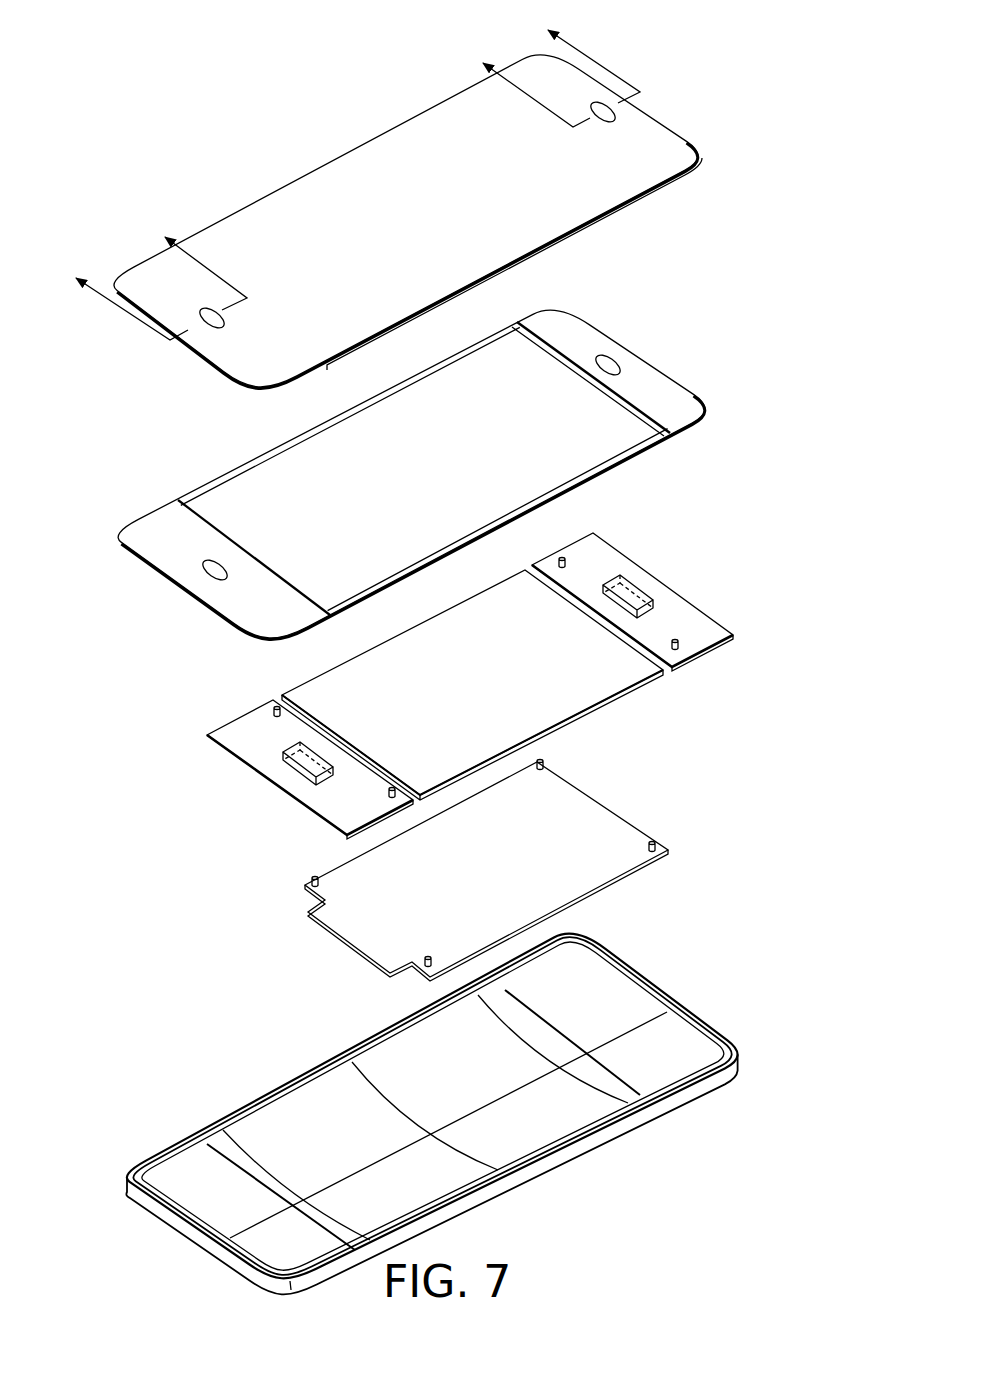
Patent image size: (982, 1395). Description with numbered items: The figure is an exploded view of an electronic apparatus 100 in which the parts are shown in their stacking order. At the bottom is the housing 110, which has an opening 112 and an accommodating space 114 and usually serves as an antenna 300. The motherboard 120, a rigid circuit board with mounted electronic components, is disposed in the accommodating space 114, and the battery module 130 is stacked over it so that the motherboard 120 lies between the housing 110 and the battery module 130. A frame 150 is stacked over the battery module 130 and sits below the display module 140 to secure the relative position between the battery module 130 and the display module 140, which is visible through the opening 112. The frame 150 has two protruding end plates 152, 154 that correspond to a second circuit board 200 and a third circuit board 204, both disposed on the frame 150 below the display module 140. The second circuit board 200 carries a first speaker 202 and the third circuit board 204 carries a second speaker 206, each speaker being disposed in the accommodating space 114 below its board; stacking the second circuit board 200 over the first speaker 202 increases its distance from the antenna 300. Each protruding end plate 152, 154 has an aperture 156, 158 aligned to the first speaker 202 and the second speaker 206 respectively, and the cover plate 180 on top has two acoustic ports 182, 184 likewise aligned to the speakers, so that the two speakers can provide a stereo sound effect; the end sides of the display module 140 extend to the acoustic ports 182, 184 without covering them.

The electronic apparatus 100 is at (785, 155).
The housing 110 is at (457, 1099).
The opening 112 is at (608, 953).
The accommodating space 114 is at (615, 992).
The motherboard 120 is at (598, 818).
The battery module 130 is at (642, 673).
The display module 140 is at (660, 186).
The frame 150 is at (650, 452).
The protruding end plate 152 is at (153, 556).
The protruding end plate 154 is at (573, 330).
The aperture 156 is at (206, 575).
The aperture 158 is at (611, 361).
The cover plate 180 is at (683, 140).
The acoustic port 182 is at (200, 321).
The acoustic port 184 is at (607, 102).
The second circuit board 200 is at (254, 744).
The first speaker 202 is at (305, 762).
The third circuit board 204 is at (600, 555).
The second speaker 206 is at (630, 590).
The antenna 300 is at (683, 1052).